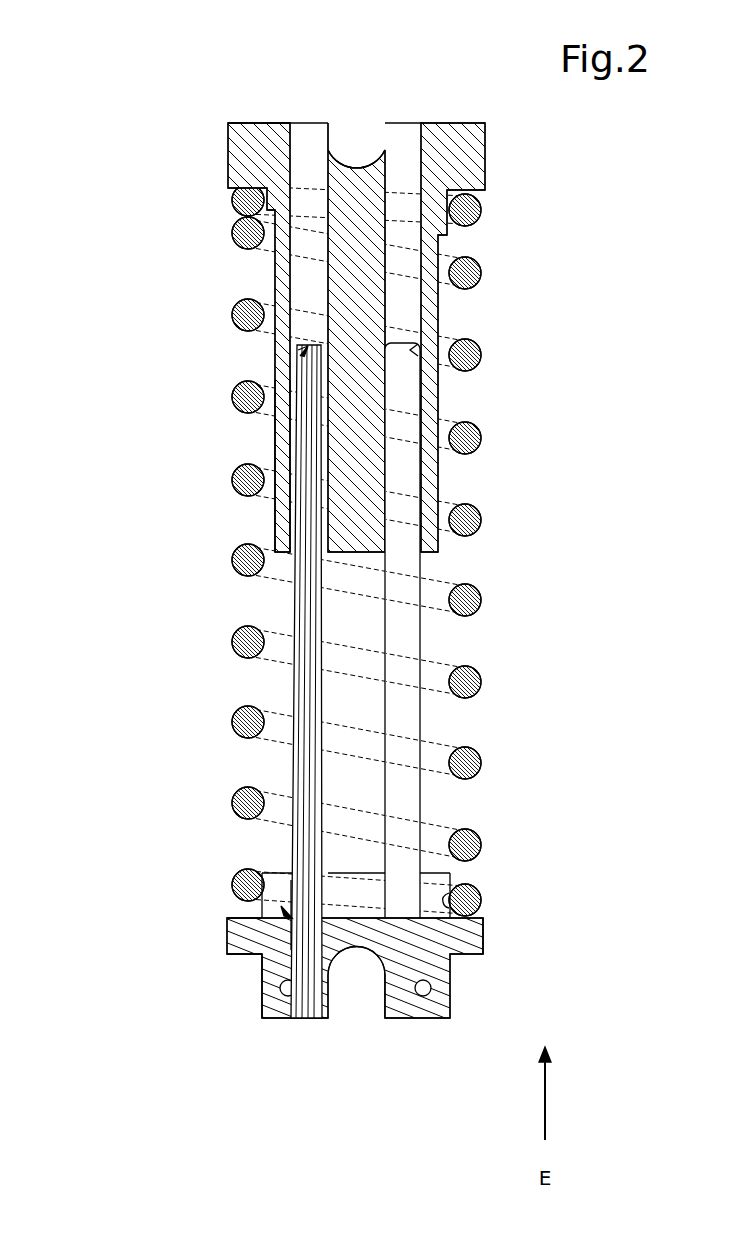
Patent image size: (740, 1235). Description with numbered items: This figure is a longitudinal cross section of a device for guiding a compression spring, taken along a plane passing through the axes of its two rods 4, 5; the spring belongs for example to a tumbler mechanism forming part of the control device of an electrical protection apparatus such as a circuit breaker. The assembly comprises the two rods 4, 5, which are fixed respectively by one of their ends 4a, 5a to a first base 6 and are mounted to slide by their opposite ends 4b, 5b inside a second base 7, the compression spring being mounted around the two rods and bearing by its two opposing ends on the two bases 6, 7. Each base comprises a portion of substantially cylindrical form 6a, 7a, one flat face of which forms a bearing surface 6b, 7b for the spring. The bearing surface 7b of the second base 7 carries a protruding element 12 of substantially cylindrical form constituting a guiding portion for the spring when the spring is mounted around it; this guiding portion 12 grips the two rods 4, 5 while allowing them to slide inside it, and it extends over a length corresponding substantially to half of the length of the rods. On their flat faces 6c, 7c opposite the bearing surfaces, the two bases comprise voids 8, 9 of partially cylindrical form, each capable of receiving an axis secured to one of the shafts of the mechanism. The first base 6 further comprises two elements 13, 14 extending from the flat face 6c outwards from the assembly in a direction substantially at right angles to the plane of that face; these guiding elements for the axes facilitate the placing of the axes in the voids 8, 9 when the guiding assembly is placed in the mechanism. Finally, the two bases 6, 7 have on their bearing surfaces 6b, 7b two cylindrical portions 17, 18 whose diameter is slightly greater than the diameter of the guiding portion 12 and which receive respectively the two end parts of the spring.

The rod 4 is at (181, 681).
The end of rod 4a is at (290, 915).
The opposite end of rod 4b is at (303, 353).
The rod 5 is at (451, 675).
The end of rod 5a is at (480, 900).
The opposite end of rod 5b is at (412, 350).
The first base 6 is at (332, 1016).
The portion of substantially cylindrical form 6a is at (227, 952).
The bearing surface 6b is at (290, 921).
The flat face 6c is at (248, 954).
The second base 7 is at (266, 276).
The portion of substantially cylindrical form 7a is at (230, 155).
The bearing surface 7b is at (230, 193).
The flat face 7c is at (277, 122).
The void 8 is at (483, 952).
The void 9 is at (355, 166).
The protruding element 12 is at (287, 458).
The guiding element for the axes 13 is at (273, 1005).
The guiding element for the axes 14 is at (442, 1005).
The cylindrical portion 17 is at (292, 918).
The cylindrical portion 18 is at (358, 550).